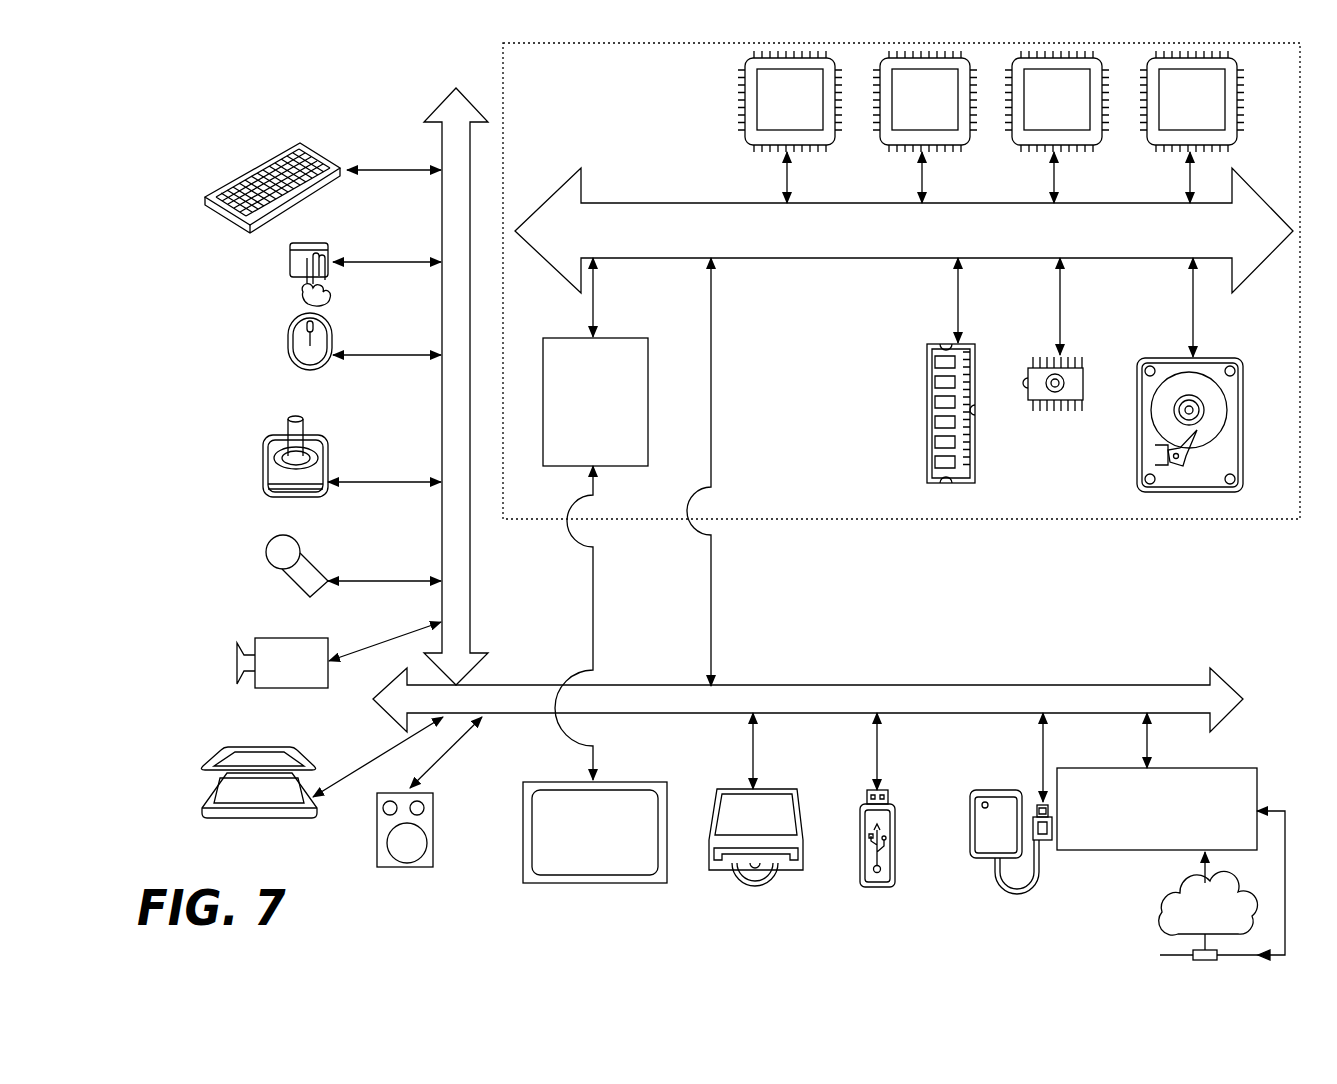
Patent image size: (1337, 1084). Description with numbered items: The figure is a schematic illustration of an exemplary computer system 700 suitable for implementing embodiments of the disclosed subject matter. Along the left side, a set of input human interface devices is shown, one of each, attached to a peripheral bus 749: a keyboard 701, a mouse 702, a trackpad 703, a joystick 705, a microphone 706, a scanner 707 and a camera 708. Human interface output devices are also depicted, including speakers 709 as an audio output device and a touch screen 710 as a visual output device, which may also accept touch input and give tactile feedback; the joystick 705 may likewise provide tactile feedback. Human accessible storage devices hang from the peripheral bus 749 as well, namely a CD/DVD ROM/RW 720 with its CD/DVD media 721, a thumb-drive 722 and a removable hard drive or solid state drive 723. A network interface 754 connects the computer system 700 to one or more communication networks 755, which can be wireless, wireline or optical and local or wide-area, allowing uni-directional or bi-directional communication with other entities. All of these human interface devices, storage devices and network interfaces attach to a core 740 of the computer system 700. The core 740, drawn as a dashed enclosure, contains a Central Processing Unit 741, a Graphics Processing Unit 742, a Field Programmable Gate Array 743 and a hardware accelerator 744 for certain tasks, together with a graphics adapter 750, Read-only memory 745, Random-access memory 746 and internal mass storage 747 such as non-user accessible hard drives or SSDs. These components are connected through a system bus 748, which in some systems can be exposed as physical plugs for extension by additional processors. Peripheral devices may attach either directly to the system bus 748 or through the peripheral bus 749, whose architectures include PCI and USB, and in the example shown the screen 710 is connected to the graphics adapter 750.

The computer system 700 is at (253, 127).
The keyboard 701 is at (210, 196).
The mouse 702 is at (289, 345).
The trackpad 703 is at (290, 263).
The joystick 705 is at (268, 480).
The microphone 706 is at (267, 552).
The scanner 707 is at (204, 804).
The camera 708 is at (238, 667).
The speakers 709 is at (405, 868).
The touch screen 710 is at (594, 884).
The CD/DVD ROM/RW 720 is at (798, 872).
The CD/DVD media 721 is at (742, 880).
The thumb-drive 722 is at (880, 888).
The removable hard drive or solid state drive 723 is at (980, 860).
The core 740 is at (895, 520).
The Central Processing Unit (CPU) 741 is at (790, 101).
The Graphics Processing Unit (GPU) 742 is at (925, 101).
The Field Programmable Gate Array (FPGA) 743 is at (1057, 101).
The hardware accelerator 744 is at (1192, 101).
The Read-only memory (ROM) 745 is at (1048, 405).
The Random-access memory 746 is at (926, 441).
The internal mass storage 747 is at (1147, 358).
The system bus 748 is at (904, 254).
The peripheral bus 749 is at (441, 133).
The graphics adapter 750 is at (595, 559).
The network interface 754 is at (1171, 864).
The communication networks 755 is at (1158, 920).